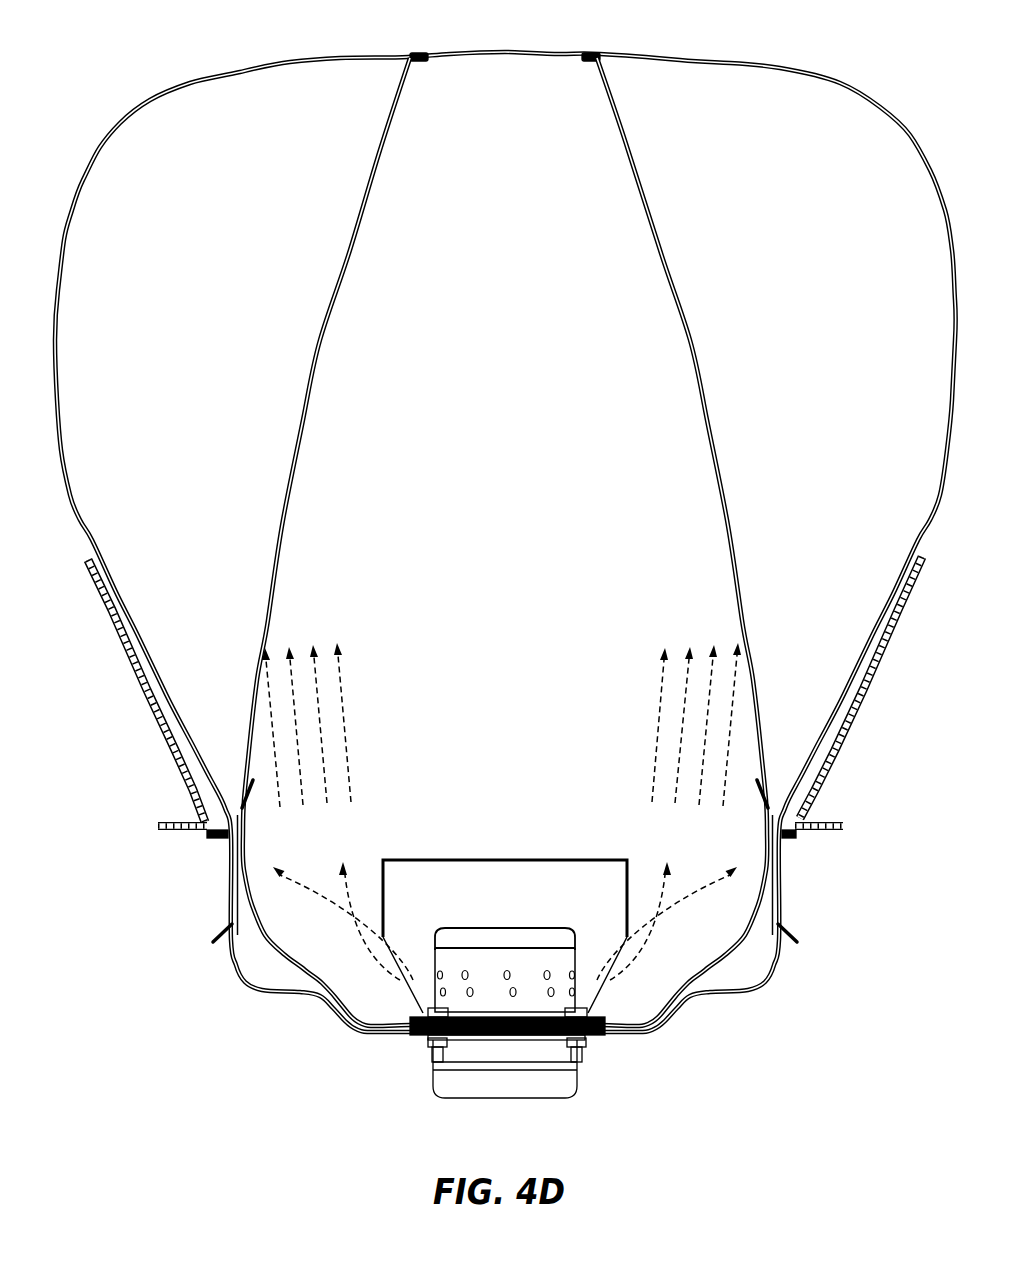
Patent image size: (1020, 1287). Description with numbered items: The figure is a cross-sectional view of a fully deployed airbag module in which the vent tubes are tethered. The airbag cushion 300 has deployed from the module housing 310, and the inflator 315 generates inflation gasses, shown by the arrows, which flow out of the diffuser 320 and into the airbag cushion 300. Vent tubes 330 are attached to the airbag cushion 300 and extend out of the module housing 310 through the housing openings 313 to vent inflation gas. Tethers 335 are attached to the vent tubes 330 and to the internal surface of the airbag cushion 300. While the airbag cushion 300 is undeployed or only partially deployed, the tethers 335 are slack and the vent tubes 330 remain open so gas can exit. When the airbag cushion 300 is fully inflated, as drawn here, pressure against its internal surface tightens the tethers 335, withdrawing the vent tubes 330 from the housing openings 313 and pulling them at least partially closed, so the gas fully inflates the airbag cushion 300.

The airbag cushion 300 is at (752, 63).
The module housing 310 is at (740, 995).
The housing openings 313 is at (238, 963).
The inflator 315 is at (487, 1003).
The diffuser 320 is at (546, 903).
The vent tubes 330 is at (223, 927).
The tethers 335 is at (303, 421).